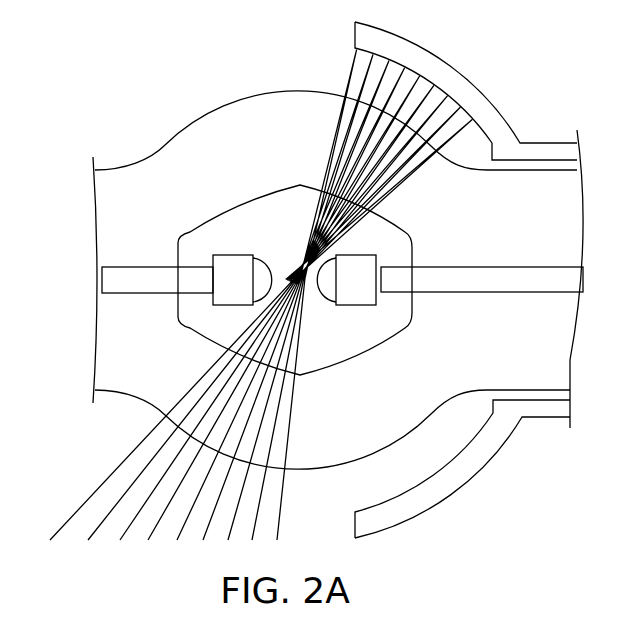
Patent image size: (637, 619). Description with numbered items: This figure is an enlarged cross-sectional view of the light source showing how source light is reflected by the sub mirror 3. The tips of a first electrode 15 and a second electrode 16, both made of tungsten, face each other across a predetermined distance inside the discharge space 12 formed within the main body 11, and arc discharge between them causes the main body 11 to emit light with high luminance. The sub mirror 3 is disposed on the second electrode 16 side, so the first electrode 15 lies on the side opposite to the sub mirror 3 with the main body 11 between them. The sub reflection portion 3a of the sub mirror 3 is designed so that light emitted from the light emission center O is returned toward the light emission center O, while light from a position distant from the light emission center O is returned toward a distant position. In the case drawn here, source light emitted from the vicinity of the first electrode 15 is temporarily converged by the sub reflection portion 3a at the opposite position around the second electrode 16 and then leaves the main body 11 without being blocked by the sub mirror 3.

The sub mirror 3 is at (461, 66).
The sub reflection portion 3a is at (497, 124).
The main body 11 is at (255, 125).
The discharge space 12 is at (237, 230).
The first electrode 15 is at (135, 287).
The second electrode 16 is at (455, 287).
The light emission center O is at (306, 299).